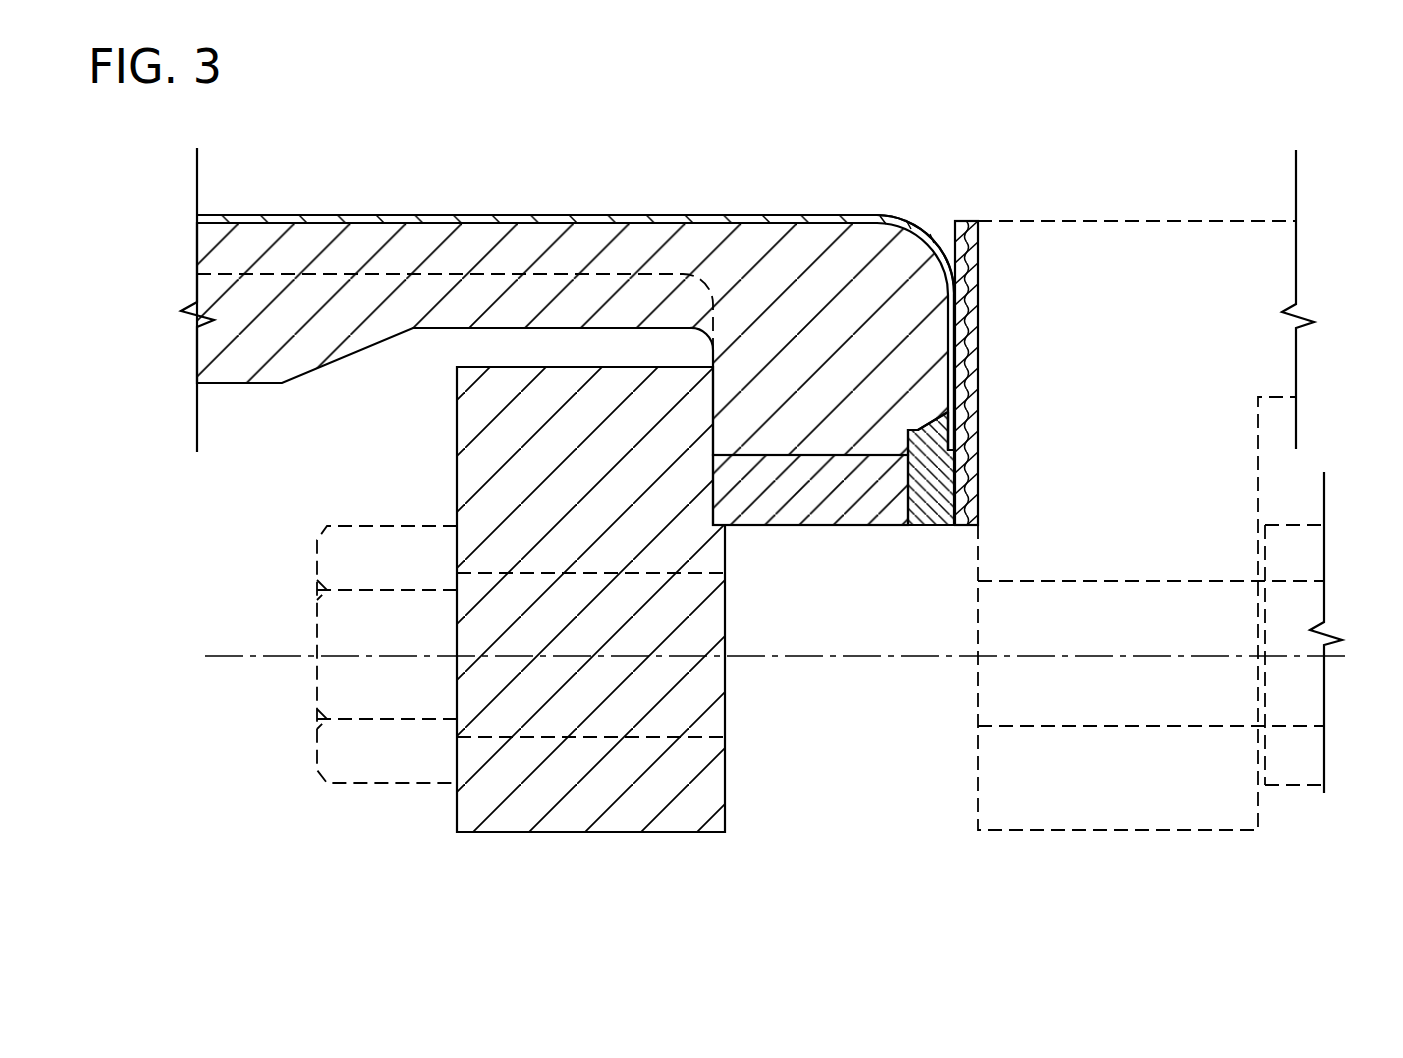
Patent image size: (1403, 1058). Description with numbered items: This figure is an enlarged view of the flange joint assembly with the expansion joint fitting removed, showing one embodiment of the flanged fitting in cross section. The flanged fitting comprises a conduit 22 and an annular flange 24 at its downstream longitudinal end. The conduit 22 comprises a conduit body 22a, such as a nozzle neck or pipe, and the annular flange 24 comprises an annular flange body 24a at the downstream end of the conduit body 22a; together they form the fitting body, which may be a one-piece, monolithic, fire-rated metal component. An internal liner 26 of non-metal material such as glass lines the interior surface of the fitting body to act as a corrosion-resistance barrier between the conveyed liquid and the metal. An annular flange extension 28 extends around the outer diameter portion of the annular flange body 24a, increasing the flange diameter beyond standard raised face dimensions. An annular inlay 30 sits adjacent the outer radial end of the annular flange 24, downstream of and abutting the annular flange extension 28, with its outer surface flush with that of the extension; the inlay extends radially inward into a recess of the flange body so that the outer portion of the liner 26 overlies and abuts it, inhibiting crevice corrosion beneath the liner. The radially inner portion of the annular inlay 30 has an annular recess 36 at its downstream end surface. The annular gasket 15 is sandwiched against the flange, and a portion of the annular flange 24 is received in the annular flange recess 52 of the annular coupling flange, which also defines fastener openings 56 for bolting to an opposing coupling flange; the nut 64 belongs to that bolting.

The annular gasket 15 is at (974, 203).
The conduit 22 is at (239, 386).
The conduit body 22a is at (537, 247).
The annular flange 24 is at (901, 219).
The annular flange body 24a is at (845, 267).
The internal liner 26 is at (394, 216).
The annular flange extension 28 is at (788, 507).
The annular inlay 30 is at (930, 507).
The annular recess 36 is at (958, 428).
The annular flange recess 52 is at (712, 405).
The fastener openings 56 is at (547, 730).
The nut 64 is at (350, 750).